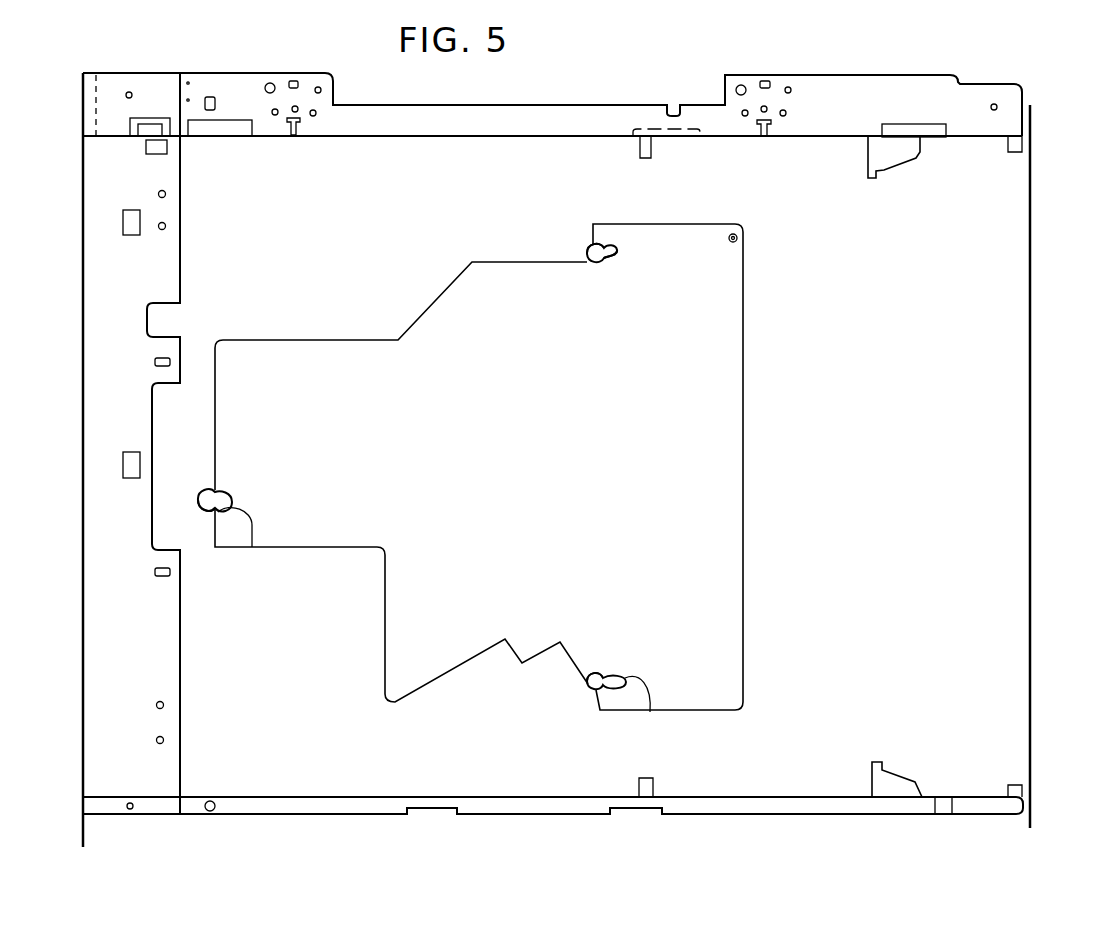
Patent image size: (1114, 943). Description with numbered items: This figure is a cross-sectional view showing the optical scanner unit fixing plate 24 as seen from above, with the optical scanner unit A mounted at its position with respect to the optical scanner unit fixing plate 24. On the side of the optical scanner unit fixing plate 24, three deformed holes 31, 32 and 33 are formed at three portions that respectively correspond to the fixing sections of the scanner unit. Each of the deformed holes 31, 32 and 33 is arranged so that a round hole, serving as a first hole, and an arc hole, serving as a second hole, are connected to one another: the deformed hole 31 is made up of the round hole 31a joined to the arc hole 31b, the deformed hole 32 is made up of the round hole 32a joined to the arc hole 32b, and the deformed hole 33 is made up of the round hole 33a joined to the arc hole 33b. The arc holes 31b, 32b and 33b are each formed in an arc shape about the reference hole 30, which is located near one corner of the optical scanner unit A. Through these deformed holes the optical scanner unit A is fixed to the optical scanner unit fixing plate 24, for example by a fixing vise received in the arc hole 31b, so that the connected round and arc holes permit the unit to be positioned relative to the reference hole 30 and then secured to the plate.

The optical scanner unit fixing plate 24 is at (1032, 283).
The reference hole 30 is at (740, 228).
The deformed hole 31 is at (197, 482).
The round hole 31a is at (204, 512).
The arc hole 31b is at (252, 548).
The deformed hole 32 is at (576, 238).
The round hole 32a is at (609, 245).
The arc hole 32b is at (618, 252).
The deformed hole 33 is at (577, 688).
The round hole 33a is at (596, 712).
The arc hole 33b is at (648, 712).
The optical scanner unit A is at (745, 420).